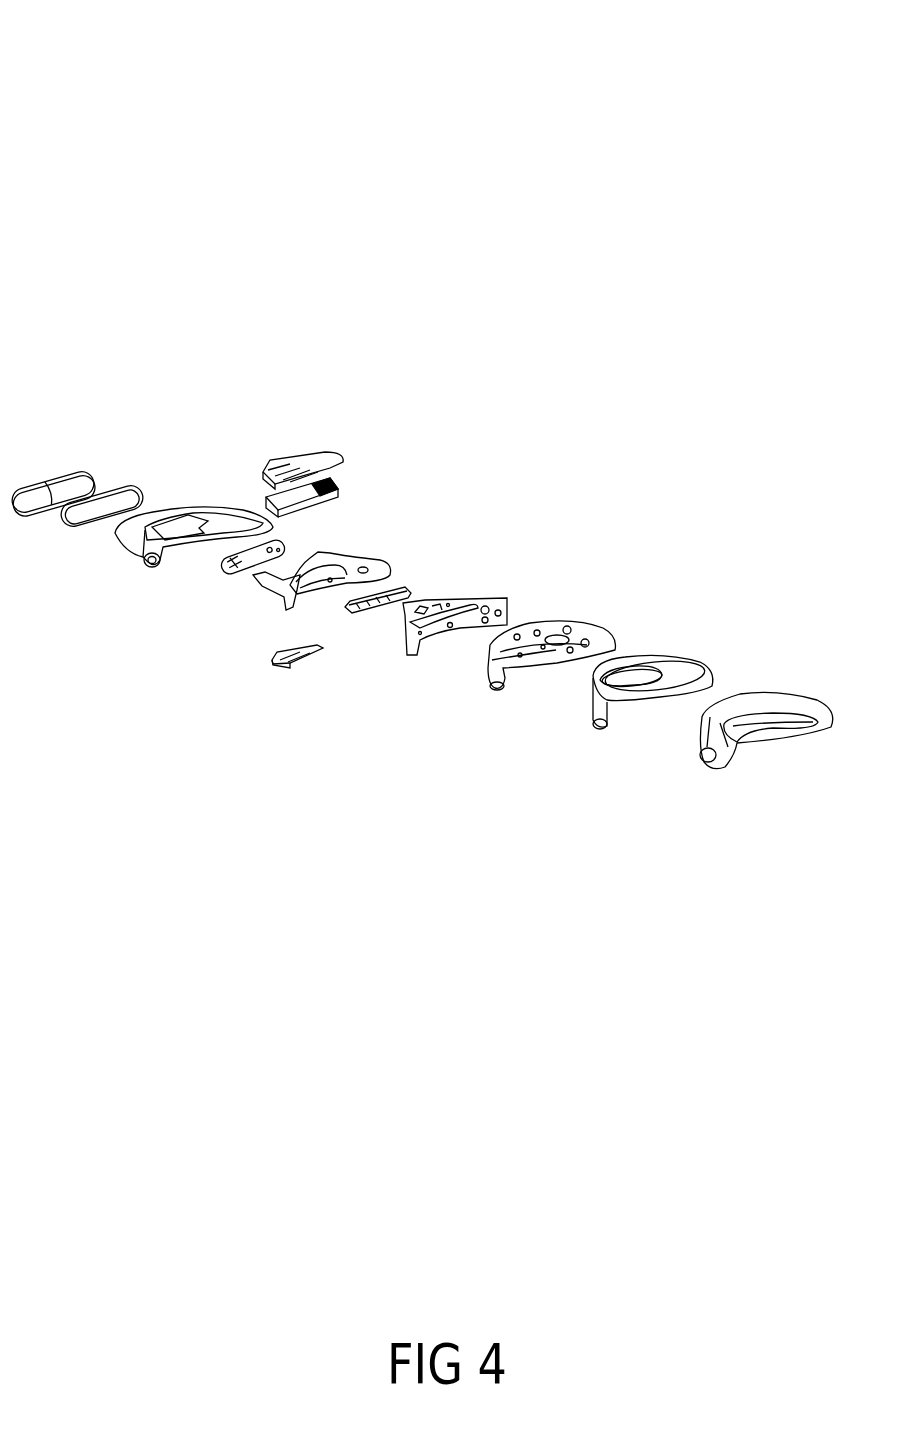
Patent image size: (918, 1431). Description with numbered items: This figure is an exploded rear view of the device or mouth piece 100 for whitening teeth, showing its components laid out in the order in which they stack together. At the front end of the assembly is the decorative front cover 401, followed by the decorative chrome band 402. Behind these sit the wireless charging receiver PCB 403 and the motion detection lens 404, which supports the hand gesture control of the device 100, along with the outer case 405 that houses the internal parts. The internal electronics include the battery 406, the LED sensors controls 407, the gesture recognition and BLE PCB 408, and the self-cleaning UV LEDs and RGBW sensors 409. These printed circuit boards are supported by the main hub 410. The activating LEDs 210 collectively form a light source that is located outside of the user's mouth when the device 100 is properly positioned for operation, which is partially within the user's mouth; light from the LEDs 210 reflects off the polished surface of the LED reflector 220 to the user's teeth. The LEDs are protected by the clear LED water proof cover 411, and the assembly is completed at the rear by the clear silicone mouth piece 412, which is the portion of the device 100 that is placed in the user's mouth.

The device or mouth piece 100 is at (162, 60).
The decorative front cover 401 is at (55, 470).
The decorative chrome band 402 is at (117, 490).
The wireless charging receiver PCB 403 is at (222, 576).
The motion detection lens 404 is at (153, 512).
The outer case 405 is at (156, 572).
The battery 406 is at (335, 487).
The LED sensors controls 407 is at (288, 670).
The gesture recognition and BLE PCB 408 is at (320, 445).
The self-cleaning UV LEDs and RGBW sensors 409 is at (408, 662).
The main hub 410 is at (350, 556).
The clear LED water proof cover 411 is at (605, 730).
The clear silicone mouth piece 412 is at (720, 772).
The LEDs 210 is at (407, 593).
The LED reflector 220 is at (500, 688).